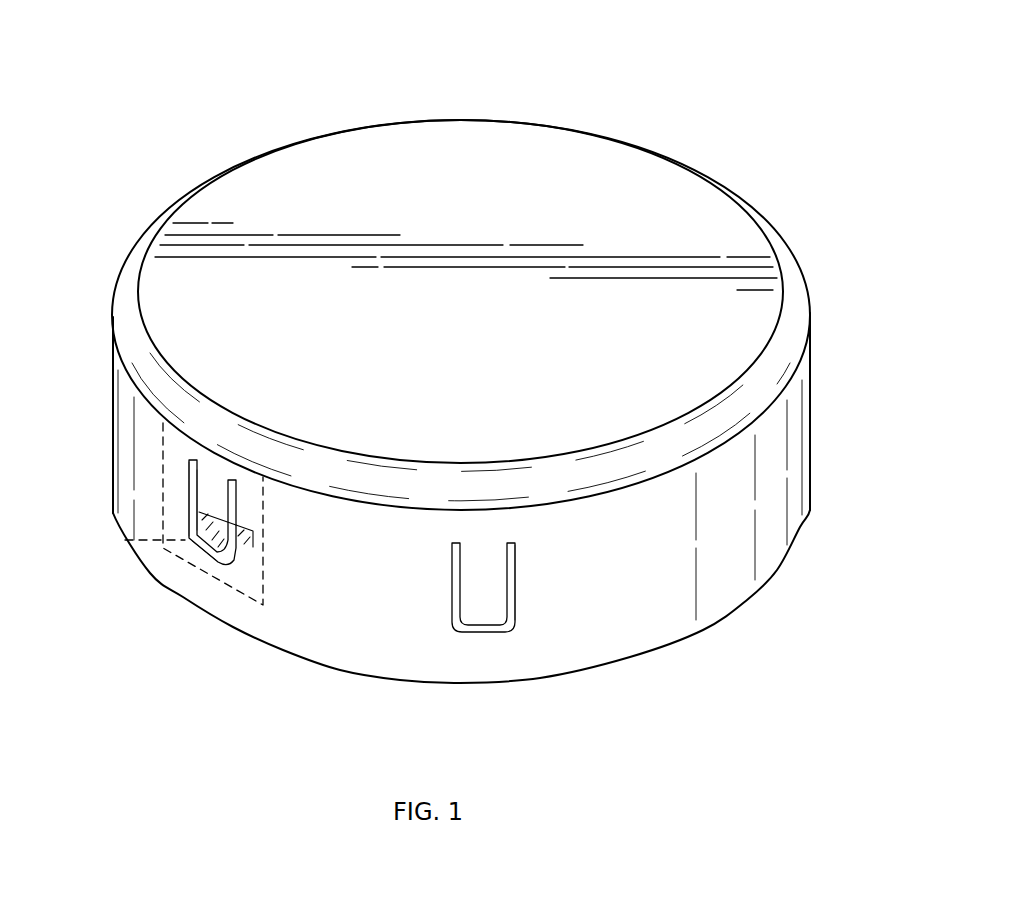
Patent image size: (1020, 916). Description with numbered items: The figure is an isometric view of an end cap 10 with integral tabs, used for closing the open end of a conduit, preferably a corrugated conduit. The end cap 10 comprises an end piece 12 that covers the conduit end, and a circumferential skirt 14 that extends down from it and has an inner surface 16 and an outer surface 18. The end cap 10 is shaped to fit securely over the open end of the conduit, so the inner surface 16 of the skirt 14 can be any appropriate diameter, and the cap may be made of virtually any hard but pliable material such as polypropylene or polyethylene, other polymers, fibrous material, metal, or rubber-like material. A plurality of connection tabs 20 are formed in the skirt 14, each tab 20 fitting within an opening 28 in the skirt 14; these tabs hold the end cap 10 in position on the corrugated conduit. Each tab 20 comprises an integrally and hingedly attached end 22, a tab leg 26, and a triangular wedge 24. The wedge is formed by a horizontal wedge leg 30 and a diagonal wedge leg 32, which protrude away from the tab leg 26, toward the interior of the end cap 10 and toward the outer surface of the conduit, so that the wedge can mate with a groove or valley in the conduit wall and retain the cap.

The end cap 10 is at (578, 88).
The end piece 12 is at (683, 196).
The circumferential skirt 14 is at (797, 393).
The inner surface 16 is at (120, 541).
The outer surface 18 is at (307, 634).
The connection tab 20 is at (236, 490).
The hingedly attached end 22 is at (218, 470).
The triangular wedge 24 is at (204, 556).
The tab leg 26 is at (193, 467).
The opening 28 is at (516, 602).
The horizontal wedge leg 30 is at (213, 513).
The diagonal wedge leg 32 is at (243, 541).